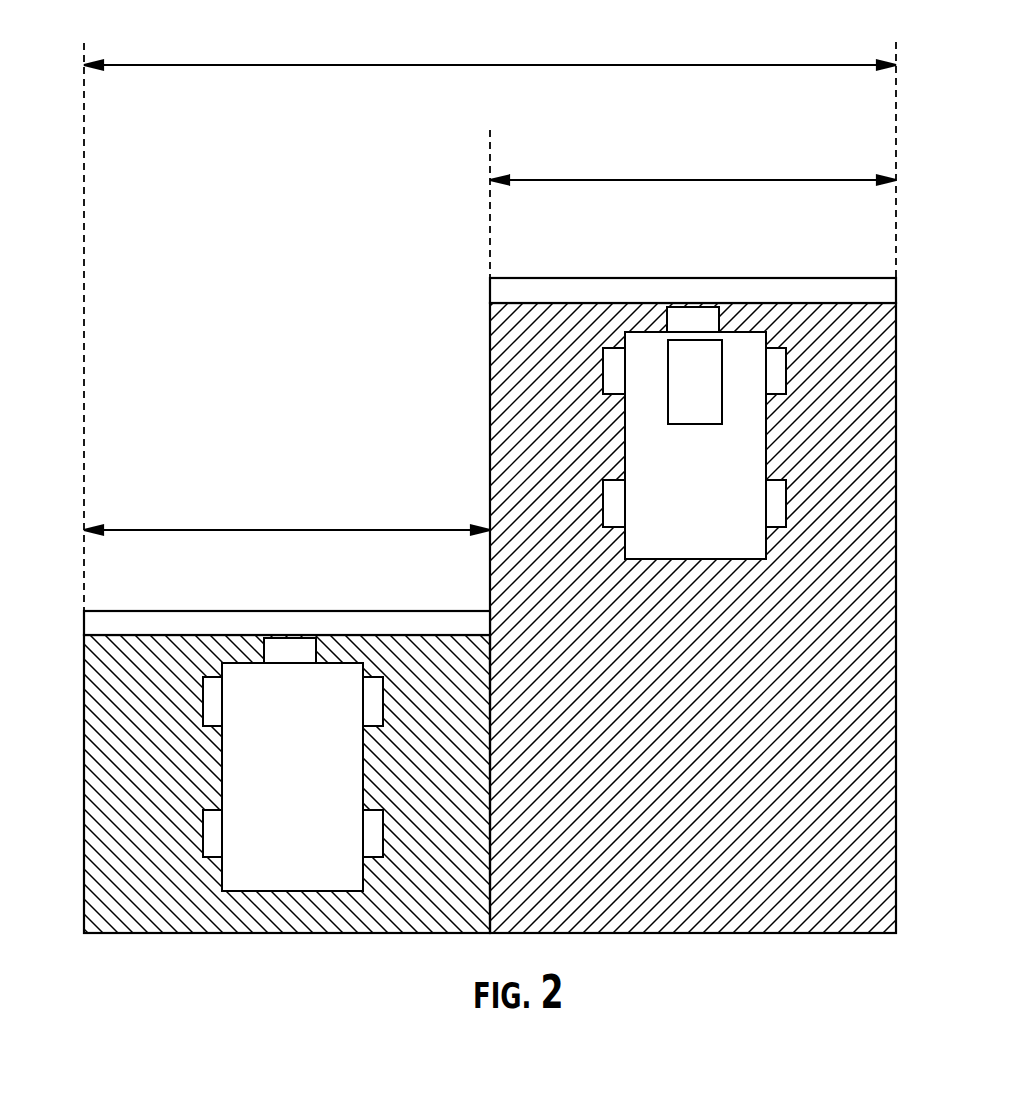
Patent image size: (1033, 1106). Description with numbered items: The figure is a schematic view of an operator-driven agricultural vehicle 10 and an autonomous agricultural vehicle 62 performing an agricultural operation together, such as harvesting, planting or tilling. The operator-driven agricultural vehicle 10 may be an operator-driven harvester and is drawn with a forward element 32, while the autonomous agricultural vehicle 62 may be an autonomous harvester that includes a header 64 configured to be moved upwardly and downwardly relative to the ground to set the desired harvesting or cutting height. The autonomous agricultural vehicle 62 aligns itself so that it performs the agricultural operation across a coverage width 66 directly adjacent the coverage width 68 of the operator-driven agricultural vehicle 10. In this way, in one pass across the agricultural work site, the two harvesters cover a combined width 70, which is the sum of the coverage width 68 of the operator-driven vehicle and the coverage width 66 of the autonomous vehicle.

The operator-driven agricultural vehicle 10 is at (766, 452).
The autonomous agricultural vehicle 62 is at (222, 735).
The cover plate 32 is at (847, 278).
The header 64 is at (135, 611).
The coverage width 66 is at (265, 530).
The coverage width 68 is at (678, 180).
The combined width 70 is at (455, 65).